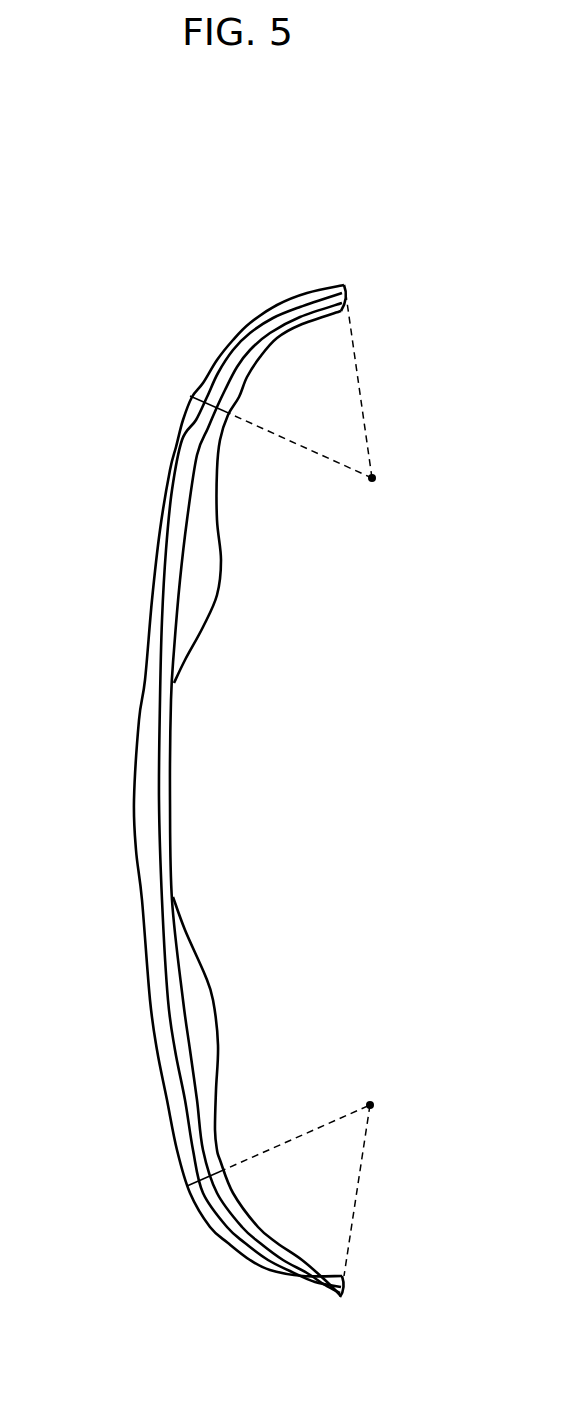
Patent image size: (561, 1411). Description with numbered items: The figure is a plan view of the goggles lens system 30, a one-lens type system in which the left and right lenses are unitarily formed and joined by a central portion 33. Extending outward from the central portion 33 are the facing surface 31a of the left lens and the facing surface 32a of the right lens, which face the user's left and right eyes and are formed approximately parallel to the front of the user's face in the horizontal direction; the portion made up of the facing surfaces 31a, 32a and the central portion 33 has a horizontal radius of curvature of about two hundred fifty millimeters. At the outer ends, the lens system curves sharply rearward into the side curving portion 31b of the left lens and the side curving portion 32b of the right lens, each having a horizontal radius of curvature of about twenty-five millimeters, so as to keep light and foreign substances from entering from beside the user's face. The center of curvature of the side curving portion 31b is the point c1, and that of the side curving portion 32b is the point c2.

The goggles lens system 30 is at (273, 803).
The facing surface of the left lens 31a is at (158, 1190).
The side curving portion of the left lens 31b is at (333, 1315).
The facing surface of the right lens 32a is at (168, 391).
The side curving portion of the right lens 32b is at (337, 266).
The central portion 33 is at (105, 697).
The center of curvature of the side curving portion of the left lens c1 is at (300, 1174).
The center of curvature of the side curving portion of the right lens c2 is at (304, 392).